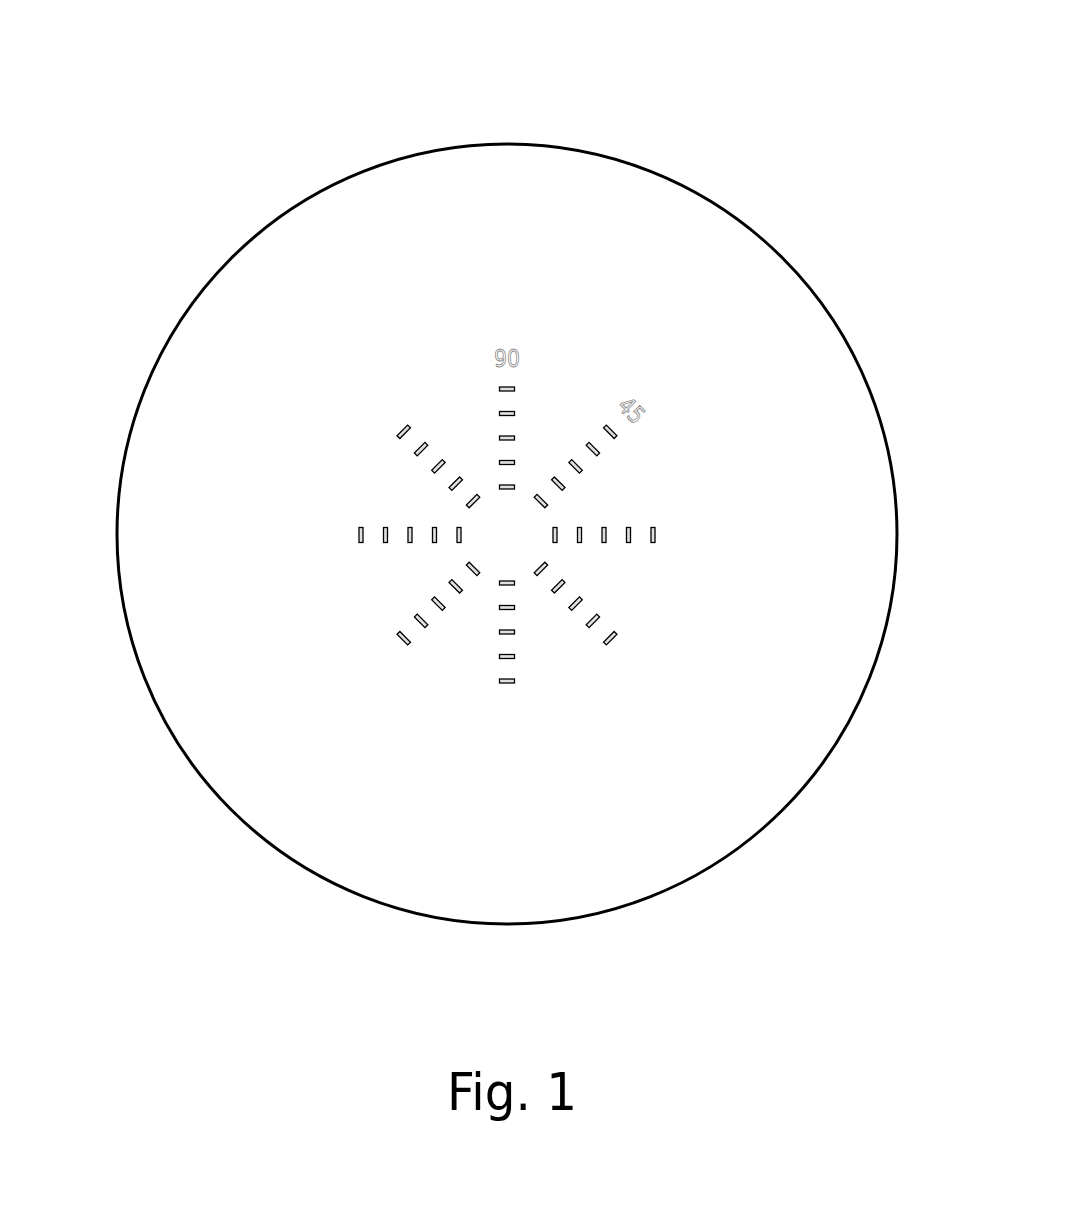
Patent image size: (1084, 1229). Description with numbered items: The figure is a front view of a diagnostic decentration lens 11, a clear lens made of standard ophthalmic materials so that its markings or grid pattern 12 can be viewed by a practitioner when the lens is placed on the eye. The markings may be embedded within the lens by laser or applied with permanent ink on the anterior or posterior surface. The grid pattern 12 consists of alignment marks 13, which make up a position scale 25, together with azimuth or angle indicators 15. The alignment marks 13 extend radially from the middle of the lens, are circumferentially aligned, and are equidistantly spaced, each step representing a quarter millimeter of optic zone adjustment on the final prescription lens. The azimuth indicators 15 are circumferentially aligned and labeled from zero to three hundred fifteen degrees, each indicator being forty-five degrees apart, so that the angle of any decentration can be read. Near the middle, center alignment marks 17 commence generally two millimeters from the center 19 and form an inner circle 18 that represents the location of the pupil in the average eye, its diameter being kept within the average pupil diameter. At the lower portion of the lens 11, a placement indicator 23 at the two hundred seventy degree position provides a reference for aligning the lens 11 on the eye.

The diagnostic decentration lens 11 is at (573, 145).
The grid pattern 12 is at (617, 637).
The alignment marks 13 is at (383, 523).
The azimuth indicators 15 is at (377, 395).
The center alignment marks 17 is at (478, 568).
The inner circle 18 is at (553, 517).
The center 19 is at (503, 537).
The placement indicator 23 is at (503, 687).
The position scale 25 is at (527, 637).